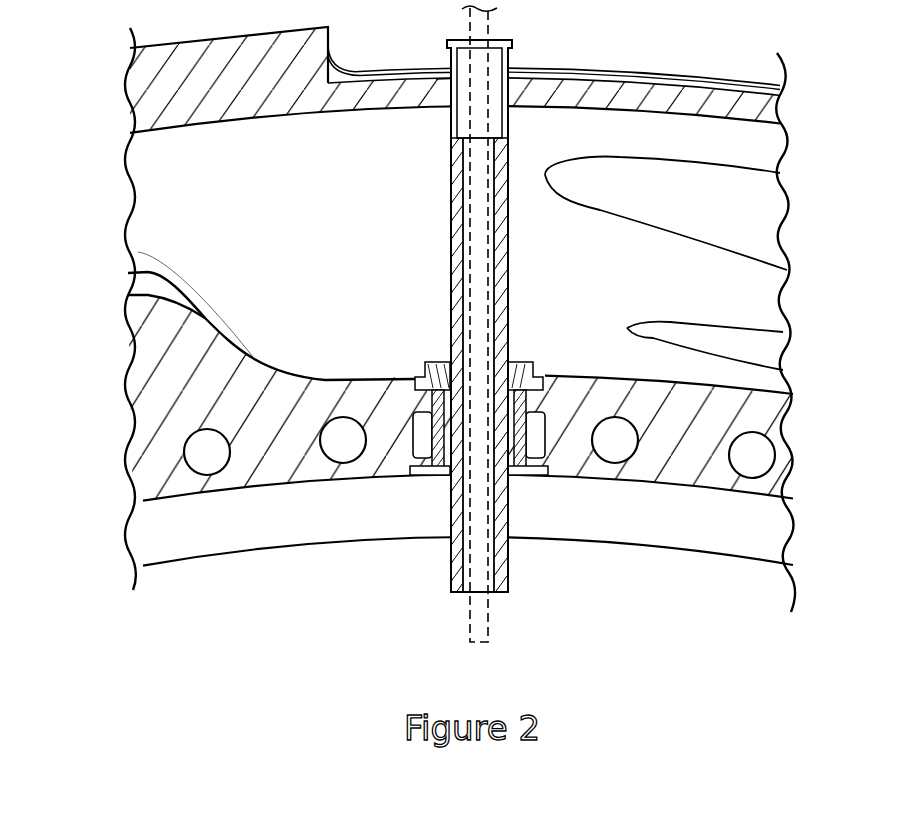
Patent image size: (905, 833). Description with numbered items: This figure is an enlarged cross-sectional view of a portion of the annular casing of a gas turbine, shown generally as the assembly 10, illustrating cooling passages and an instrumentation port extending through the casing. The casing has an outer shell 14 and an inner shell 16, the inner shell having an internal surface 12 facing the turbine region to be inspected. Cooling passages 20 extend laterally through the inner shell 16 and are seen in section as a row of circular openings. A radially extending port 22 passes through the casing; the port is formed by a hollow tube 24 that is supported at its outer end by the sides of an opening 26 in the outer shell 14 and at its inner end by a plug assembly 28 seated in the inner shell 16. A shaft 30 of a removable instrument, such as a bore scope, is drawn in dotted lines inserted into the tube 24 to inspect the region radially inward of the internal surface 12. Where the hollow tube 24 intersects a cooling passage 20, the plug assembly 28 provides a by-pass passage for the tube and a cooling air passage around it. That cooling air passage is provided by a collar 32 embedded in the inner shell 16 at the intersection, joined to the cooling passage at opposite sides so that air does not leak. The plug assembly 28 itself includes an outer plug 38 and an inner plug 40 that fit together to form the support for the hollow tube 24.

The turbine assembly 10 is at (90, 260).
The internal surface 12 is at (228, 558).
The outer shell 14 is at (143, 103).
The inner shell 16 is at (148, 360).
The cooling passage 20 is at (200, 468).
The radially extending port 22 is at (513, 68).
The hollow tube 24 is at (505, 160).
The opening 26 is at (436, 81).
The plug assembly 28 is at (527, 480).
The shaft 30 is at (470, 628).
The collar 32 is at (415, 443).
The outer plug 38 is at (528, 378).
The inner plug 40 is at (430, 474).